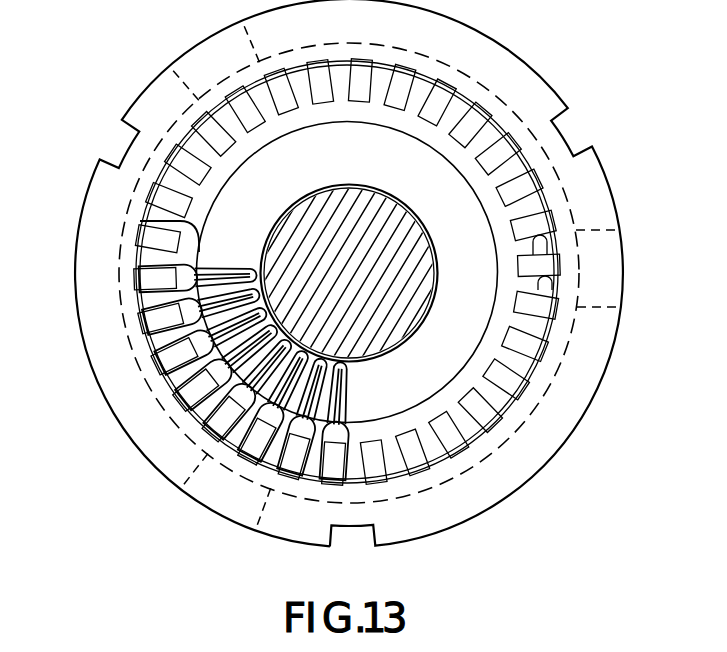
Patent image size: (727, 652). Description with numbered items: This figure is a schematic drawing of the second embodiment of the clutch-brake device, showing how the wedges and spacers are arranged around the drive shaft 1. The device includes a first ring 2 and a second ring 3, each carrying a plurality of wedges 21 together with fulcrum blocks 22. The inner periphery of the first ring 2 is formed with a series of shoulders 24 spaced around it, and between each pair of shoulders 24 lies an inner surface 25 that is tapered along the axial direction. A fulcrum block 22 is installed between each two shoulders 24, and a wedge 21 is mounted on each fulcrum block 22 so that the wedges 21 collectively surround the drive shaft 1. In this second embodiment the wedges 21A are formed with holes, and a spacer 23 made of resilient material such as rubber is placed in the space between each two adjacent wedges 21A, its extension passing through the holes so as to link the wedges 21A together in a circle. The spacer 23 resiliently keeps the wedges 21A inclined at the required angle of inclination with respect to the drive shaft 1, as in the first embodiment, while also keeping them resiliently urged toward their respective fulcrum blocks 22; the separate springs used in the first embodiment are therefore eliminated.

The drive shaft 1 is at (425, 238).
The first ring 2 is at (349, 273).
The second ring 3 is at (545, 462).
The wedge 21 is at (160, 220).
The wedge 21A is at (330, 389).
The fulcrum block 22 is at (155, 265).
The spacer 23 is at (138, 283).
The shoulder 24 is at (560, 230).
The inner surface 25 is at (558, 278).